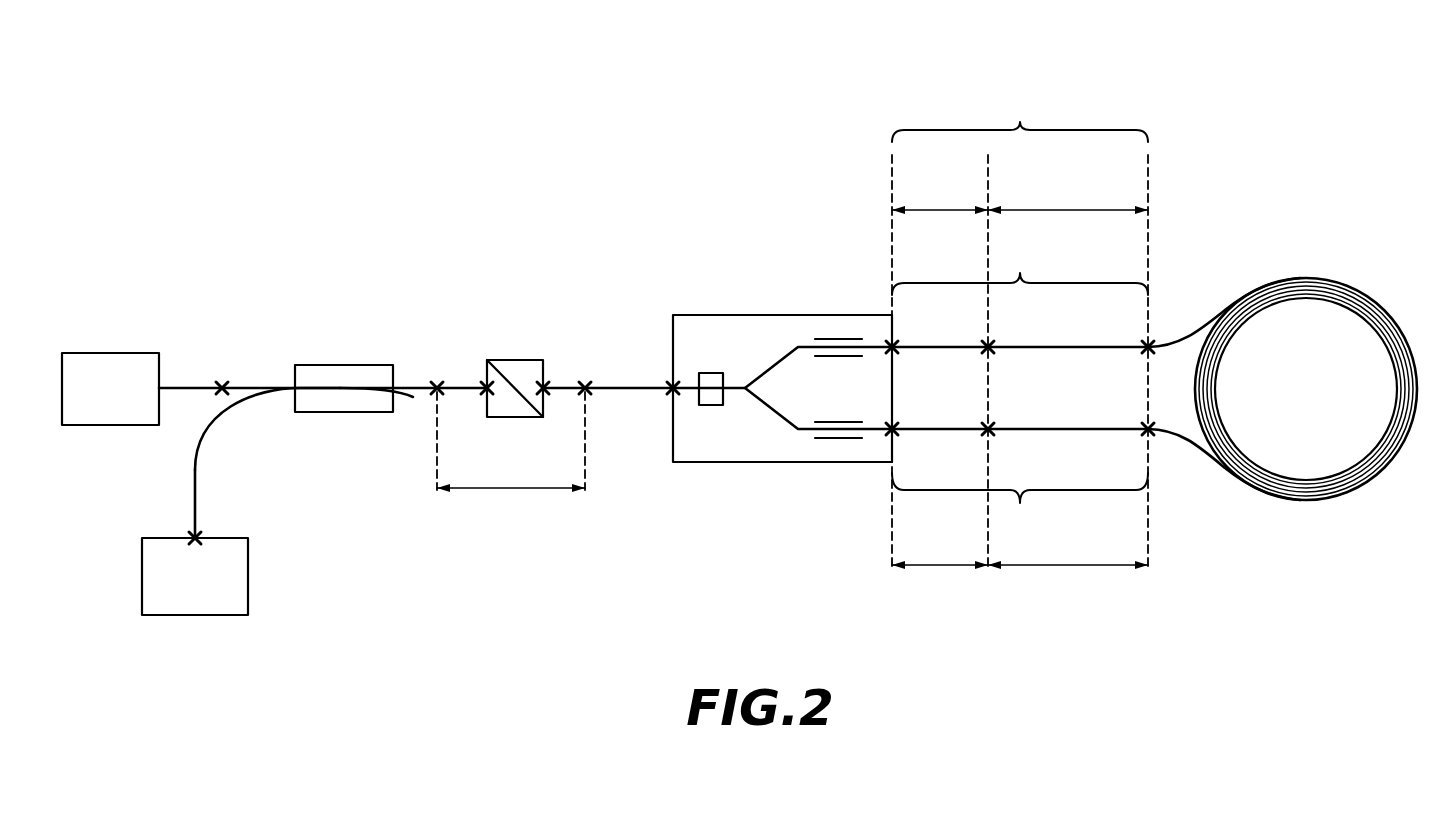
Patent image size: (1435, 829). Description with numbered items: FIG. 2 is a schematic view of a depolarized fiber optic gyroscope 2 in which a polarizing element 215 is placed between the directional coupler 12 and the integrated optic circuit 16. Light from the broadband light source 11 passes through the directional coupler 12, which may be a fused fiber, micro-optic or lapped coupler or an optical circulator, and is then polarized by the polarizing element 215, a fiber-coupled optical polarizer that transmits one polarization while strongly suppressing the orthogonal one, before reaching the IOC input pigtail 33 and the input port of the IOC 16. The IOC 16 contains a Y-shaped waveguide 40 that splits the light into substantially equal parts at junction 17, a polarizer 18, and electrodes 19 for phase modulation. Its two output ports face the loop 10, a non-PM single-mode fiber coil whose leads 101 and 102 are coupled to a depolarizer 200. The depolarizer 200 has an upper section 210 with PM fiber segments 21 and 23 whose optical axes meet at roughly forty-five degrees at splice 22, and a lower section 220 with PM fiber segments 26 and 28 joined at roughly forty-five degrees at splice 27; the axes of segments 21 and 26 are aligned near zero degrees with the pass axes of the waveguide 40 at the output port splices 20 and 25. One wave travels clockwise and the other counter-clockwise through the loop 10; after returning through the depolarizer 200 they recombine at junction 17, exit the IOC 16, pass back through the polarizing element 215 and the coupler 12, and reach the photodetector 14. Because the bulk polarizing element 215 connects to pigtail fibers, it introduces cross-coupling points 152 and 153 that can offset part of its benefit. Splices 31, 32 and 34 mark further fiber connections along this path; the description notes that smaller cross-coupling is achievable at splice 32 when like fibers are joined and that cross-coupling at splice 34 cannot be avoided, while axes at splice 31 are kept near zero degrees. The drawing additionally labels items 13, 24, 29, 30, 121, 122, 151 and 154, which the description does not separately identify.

The depolarized gyroscope 2 is at (506, 147).
The sensing loop 10 is at (1330, 280).
The broadband light source 11 is at (100, 353).
The directional coupler 12 is at (335, 365).
The coupler output fiber 13 is at (198, 536).
The photodetector 14 is at (222, 615).
The integrated optic circuit 16 is at (752, 315).
The junction 17 is at (745, 392).
The polarizer 18 is at (713, 373).
The electrodes 19 is at (830, 440).
The output port splice 20 is at (890, 343).
The PM fiber segment 21 is at (930, 346).
The splice 22 is at (990, 345).
The PM fiber segment 23 is at (1078, 346).
The splice 24 is at (1147, 352).
The output port splice 25 is at (890, 434).
The PM fiber segment 26 is at (918, 431).
The splice 27 is at (988, 426).
The PM fiber segment 28 is at (1053, 431).
The splice 29 is at (1147, 426).
The splice 30 is at (222, 382).
The splice 31 is at (437, 382).
The splice 32 is at (586, 393).
The IOC input pigtail 33 is at (620, 387).
The splice 34 is at (671, 390).
The Y-shape waveguide 40 is at (770, 370).
The lead 101 is at (1220, 300).
The lead 102 is at (1220, 478).
The coupler fiber 121 is at (268, 387).
The coupler fiber 122 is at (404, 380).
The splice 151 is at (485, 386).
The cross-coupling point 152 is at (486, 392).
The cross-coupling point 153 is at (545, 385).
The splice 154 is at (545, 392).
The depolarizer 200 is at (1020, 340).
The upper section 210 is at (1020, 270).
The polarizing element 215 is at (527, 360).
The lower section 220 is at (1020, 502).